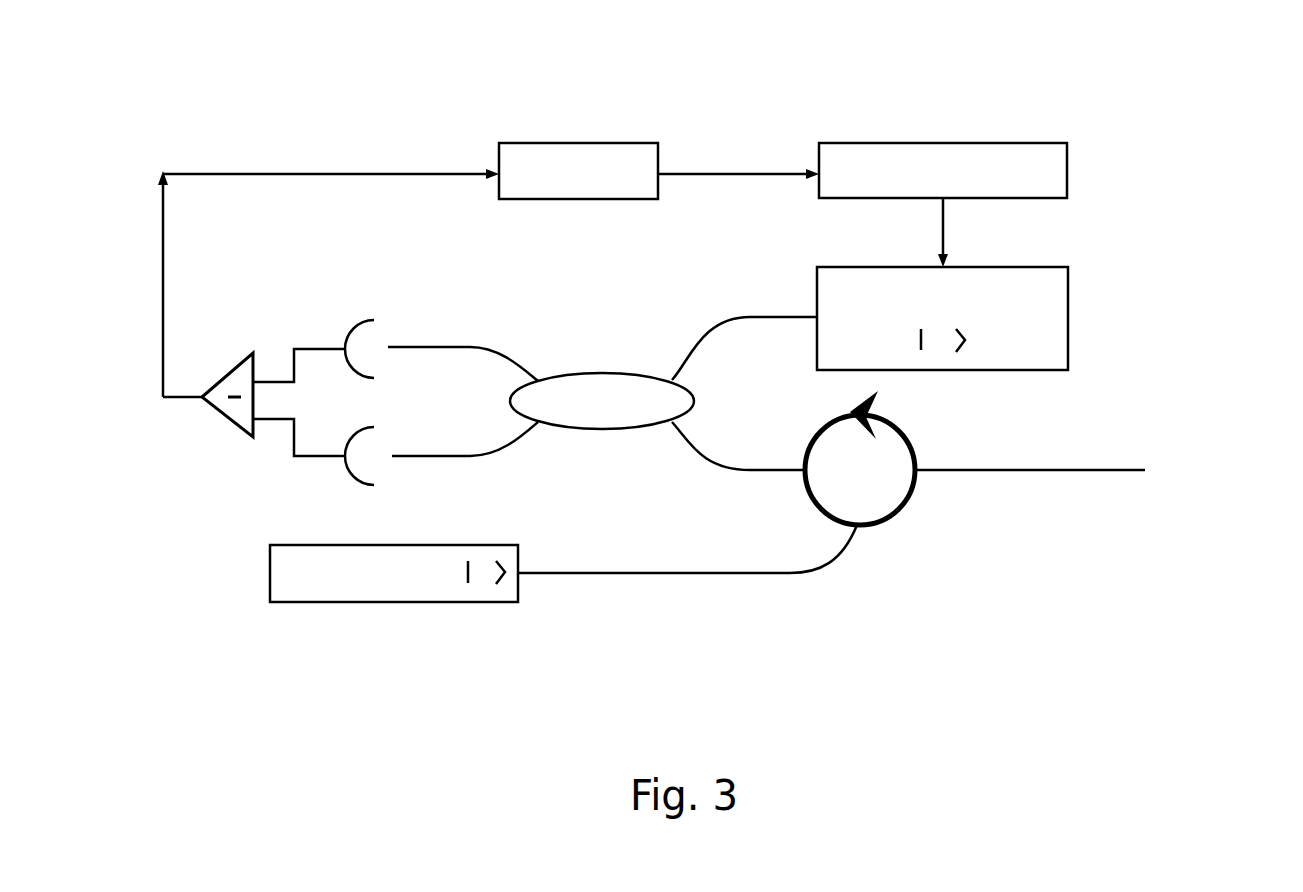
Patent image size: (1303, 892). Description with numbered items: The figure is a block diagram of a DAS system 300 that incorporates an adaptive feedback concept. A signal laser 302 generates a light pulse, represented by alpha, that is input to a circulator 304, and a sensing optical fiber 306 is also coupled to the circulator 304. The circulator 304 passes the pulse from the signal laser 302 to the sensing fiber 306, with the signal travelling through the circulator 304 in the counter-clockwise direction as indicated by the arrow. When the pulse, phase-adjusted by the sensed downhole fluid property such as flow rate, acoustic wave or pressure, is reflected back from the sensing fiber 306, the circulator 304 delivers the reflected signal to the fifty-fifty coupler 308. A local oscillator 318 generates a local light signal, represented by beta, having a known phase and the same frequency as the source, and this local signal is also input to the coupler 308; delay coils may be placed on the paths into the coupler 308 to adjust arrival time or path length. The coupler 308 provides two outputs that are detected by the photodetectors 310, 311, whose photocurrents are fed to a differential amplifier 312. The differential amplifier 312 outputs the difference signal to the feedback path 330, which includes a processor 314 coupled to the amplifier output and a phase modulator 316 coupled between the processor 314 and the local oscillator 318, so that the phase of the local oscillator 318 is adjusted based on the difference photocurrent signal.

The DAS system 300 is at (1150, 285).
The signal laser 302 is at (288, 545).
The circulator 304 is at (817, 506).
The sensing optical fiber 306 is at (1015, 469).
The 50%-50% coupler 308 is at (613, 431).
The photodetector 310 is at (353, 328).
The photodetector 311 is at (352, 474).
The differential amplifier 312 is at (228, 377).
The processor 314 is at (595, 143).
The phase modulator 316 is at (1003, 143).
The local oscillator 318 is at (1003, 267).
The feedback path 330 is at (231, 106).